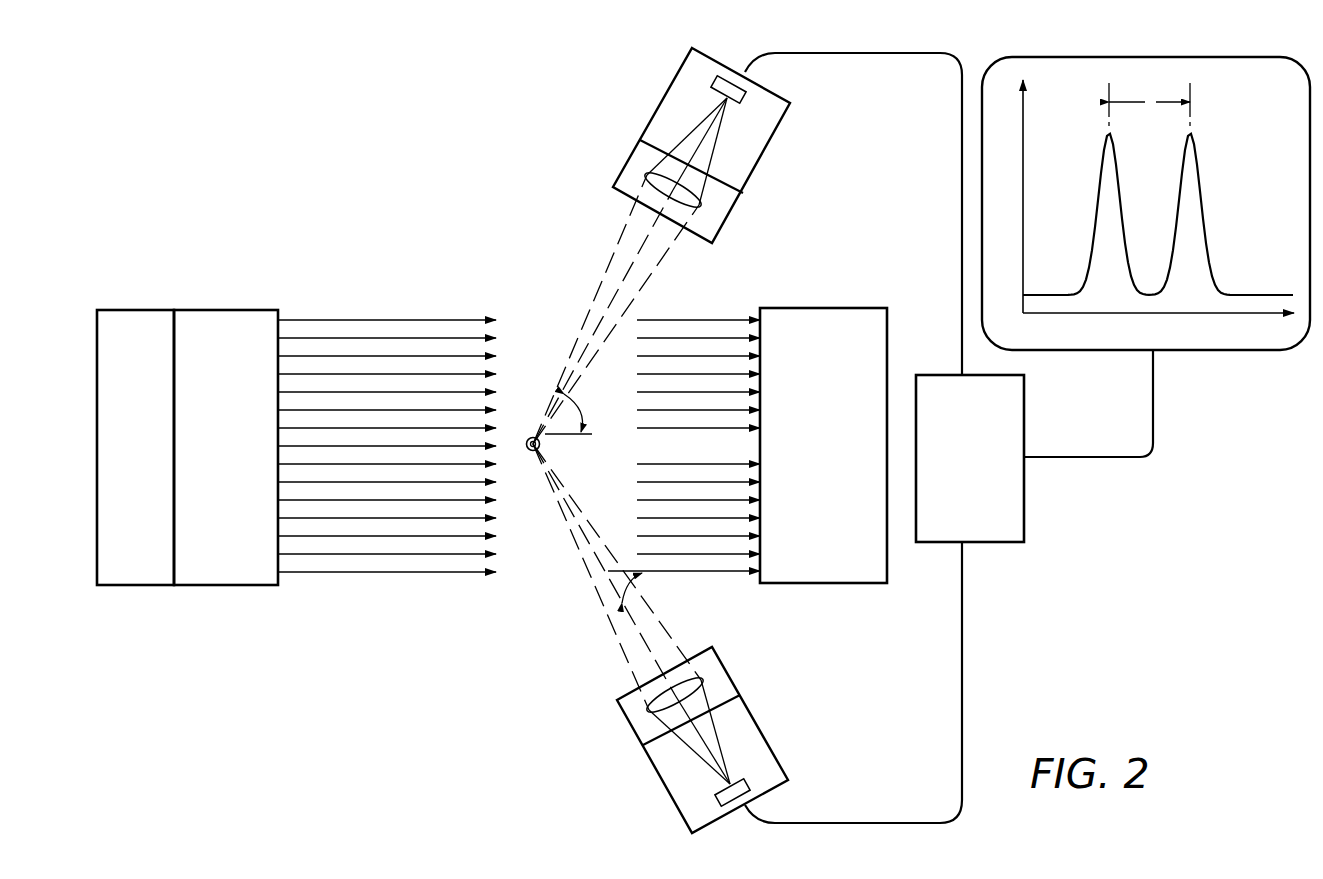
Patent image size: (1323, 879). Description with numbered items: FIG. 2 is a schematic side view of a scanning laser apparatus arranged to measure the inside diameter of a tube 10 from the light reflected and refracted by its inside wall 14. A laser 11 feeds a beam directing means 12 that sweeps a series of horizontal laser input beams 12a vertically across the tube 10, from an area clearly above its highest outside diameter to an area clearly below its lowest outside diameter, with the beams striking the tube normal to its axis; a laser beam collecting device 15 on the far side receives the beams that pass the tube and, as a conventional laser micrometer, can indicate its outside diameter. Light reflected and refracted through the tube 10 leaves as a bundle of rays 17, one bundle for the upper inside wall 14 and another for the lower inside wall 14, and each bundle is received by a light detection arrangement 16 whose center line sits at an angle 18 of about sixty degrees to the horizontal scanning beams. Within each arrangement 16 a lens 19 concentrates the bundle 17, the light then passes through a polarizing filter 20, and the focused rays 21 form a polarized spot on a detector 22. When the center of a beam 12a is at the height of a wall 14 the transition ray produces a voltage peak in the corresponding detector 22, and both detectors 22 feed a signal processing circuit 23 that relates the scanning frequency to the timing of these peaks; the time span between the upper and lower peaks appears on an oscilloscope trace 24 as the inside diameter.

The tube 10 is at (529, 451).
The laser 11 is at (146, 317).
The beam directing means 12 is at (228, 317).
The laser input beams 12a is at (388, 577).
The inside wall 14 is at (544, 436).
The laser beam collecting device 15 is at (858, 308).
The light detection arrangement 16 is at (613, 182).
The bundle of rays 17 is at (575, 340).
The angle 18 is at (579, 424).
The lens 19 is at (704, 202).
The polarizing filter 20 is at (642, 142).
The focused rays 21 is at (695, 130).
The detector 22 is at (739, 100).
The signal processing circuit 23 is at (1006, 537).
The oscilloscope trace 24 is at (1256, 350).